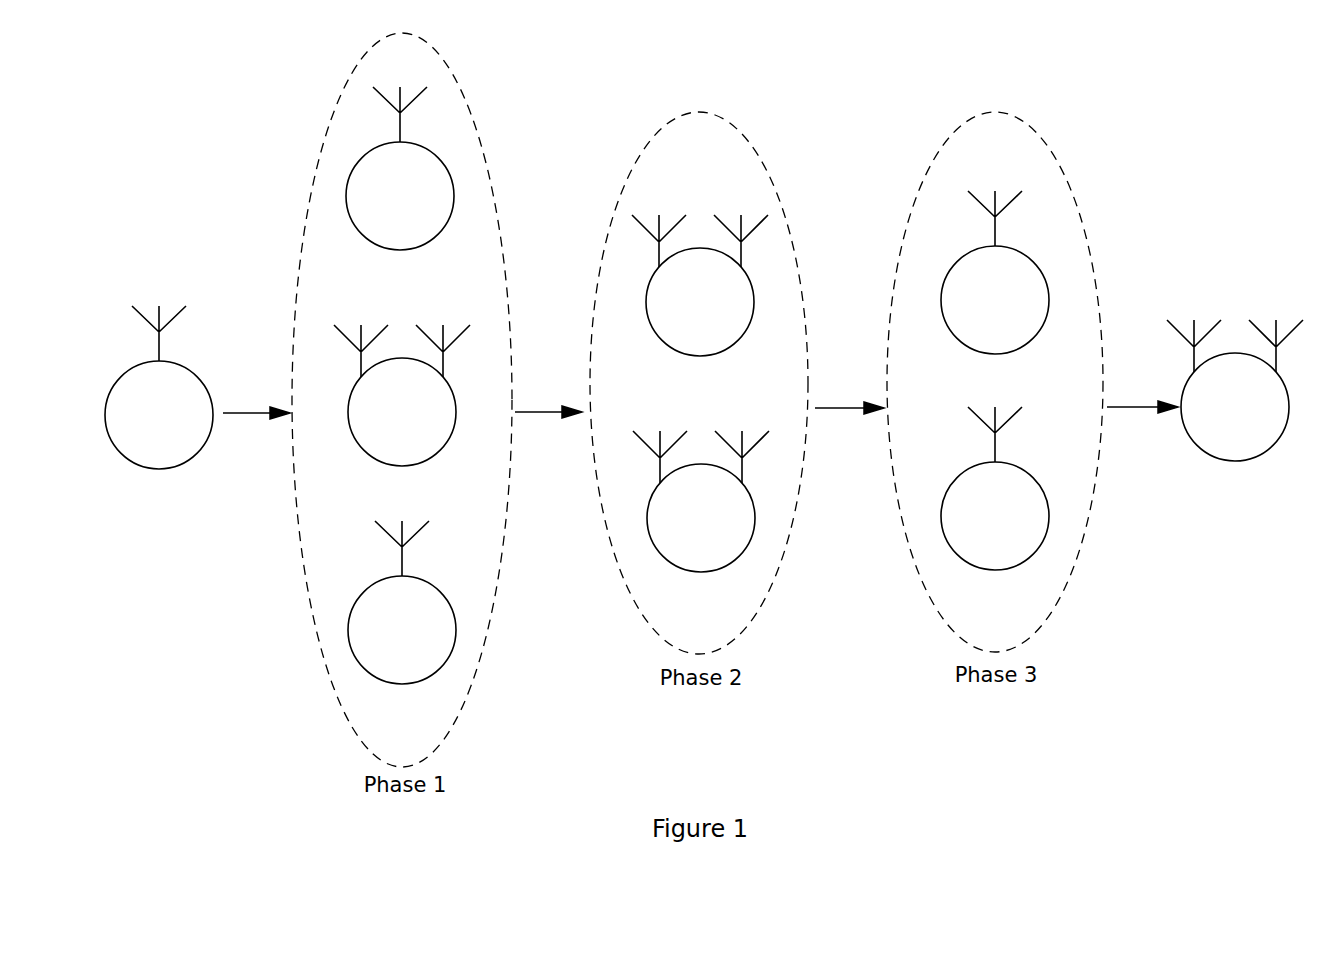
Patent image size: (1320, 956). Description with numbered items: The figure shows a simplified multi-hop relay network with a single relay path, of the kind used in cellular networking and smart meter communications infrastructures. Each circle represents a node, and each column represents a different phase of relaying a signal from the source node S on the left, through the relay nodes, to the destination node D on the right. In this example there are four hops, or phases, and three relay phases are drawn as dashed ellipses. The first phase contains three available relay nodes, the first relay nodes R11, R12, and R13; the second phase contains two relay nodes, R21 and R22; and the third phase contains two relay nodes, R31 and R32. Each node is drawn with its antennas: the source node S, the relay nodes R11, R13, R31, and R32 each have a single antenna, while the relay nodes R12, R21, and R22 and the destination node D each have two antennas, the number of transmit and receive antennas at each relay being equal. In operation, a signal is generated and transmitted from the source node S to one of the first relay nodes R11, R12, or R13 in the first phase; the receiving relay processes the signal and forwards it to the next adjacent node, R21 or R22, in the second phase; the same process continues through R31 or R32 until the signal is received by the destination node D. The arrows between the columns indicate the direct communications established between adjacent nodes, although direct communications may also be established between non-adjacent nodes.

The source node S is at (159, 401).
The destination node D is at (1235, 403).
The first relay node R11 is at (400, 168).
The first relay node R12 is at (402, 395).
The first relay node R13 is at (402, 602).
The second relay node R21 is at (700, 285).
The second relay node R22 is at (701, 501).
The third relay node R31 is at (995, 272).
The third relay node R32 is at (995, 488).